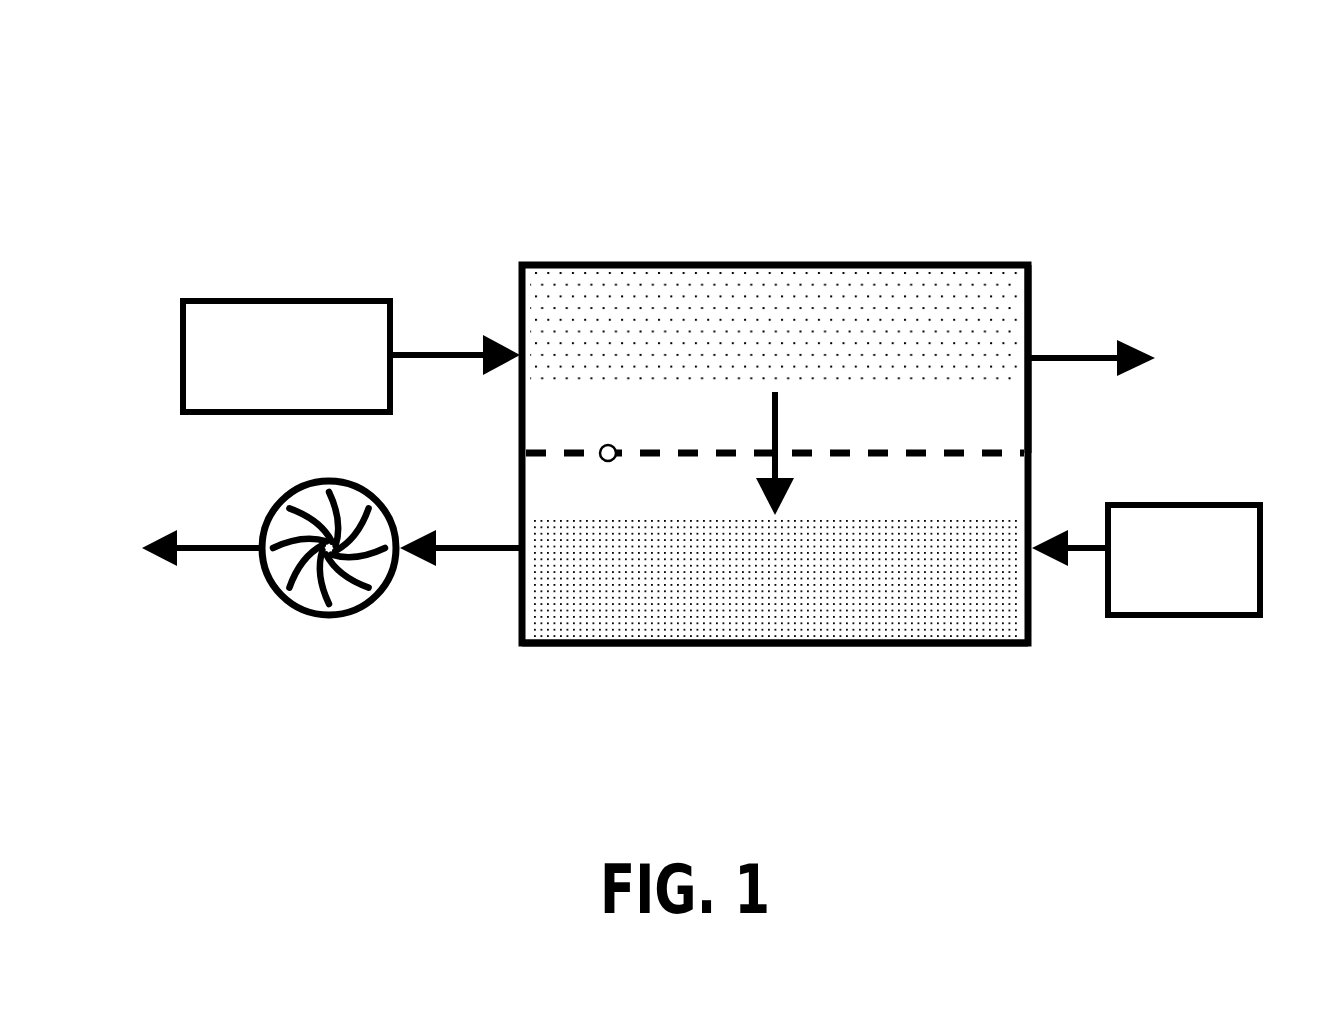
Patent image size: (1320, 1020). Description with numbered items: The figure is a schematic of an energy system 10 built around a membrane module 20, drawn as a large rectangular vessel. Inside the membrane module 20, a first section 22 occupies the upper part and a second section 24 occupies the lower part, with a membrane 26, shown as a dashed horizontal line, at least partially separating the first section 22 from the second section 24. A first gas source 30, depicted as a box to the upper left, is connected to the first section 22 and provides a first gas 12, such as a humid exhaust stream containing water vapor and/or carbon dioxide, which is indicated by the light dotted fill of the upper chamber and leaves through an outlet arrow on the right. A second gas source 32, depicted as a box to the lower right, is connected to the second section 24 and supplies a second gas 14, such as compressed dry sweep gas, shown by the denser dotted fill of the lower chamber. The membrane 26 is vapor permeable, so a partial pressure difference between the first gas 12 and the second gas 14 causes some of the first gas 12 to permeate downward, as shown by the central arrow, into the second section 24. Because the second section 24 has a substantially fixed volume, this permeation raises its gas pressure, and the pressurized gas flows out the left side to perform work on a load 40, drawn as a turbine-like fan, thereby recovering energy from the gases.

The energy system 10 is at (1083, 138).
The first gas 12 is at (605, 303).
The second gas 14 is at (900, 600).
The membrane module 20 is at (621, 211).
The first section 22 is at (1035, 307).
The second section 24 is at (1007, 645).
The membrane 26 is at (606, 461).
The first gas source 30 is at (238, 298).
The second gas source 32 is at (1233, 502).
The load 40 is at (328, 618).